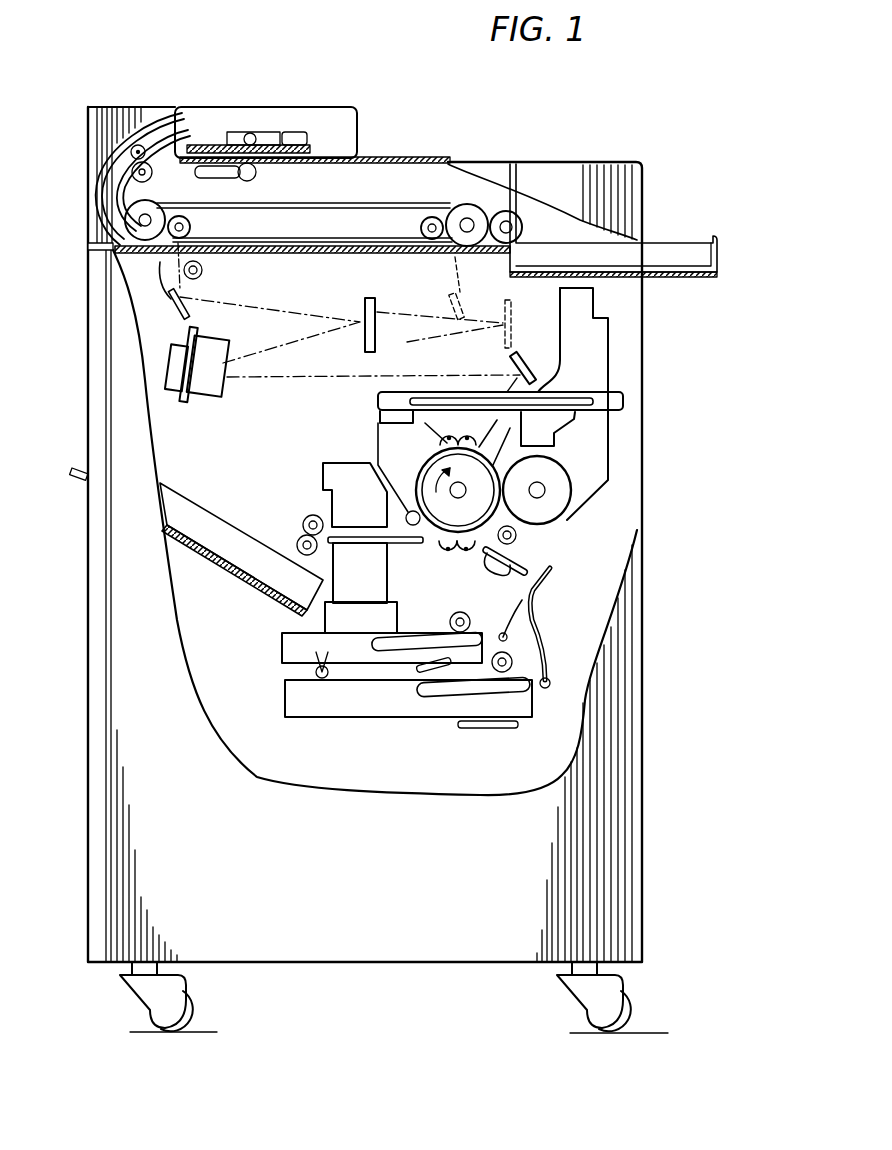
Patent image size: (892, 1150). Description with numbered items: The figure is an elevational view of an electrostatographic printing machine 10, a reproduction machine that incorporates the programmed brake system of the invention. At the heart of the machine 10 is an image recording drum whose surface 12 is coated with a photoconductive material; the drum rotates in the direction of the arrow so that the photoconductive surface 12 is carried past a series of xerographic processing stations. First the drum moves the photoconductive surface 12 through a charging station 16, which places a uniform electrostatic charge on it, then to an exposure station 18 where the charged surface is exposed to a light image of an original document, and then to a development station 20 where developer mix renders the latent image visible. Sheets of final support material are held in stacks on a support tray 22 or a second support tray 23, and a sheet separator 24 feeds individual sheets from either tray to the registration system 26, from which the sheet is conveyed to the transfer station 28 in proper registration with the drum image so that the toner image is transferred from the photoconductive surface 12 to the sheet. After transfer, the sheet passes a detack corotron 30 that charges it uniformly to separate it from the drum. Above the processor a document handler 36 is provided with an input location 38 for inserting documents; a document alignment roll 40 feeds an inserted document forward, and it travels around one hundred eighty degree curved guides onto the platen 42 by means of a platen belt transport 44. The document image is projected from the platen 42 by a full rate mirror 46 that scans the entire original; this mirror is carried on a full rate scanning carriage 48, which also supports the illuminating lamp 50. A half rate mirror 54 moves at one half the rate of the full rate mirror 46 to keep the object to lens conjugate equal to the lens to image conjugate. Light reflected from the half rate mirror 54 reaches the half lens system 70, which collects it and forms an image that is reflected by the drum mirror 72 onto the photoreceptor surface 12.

The electrostatographic printing machine 10 is at (654, 391).
The photoconductive surface 12 is at (432, 462).
The charging station 16 is at (380, 414).
The exposure station 18 is at (490, 436).
The development station 20 is at (548, 477).
The support tray 22 is at (282, 653).
The support tray 23 is at (285, 700).
The sheet separator 24 is at (468, 622).
The registration system 26 is at (522, 540).
The transfer station 28 is at (466, 552).
The detack corotron 30 is at (448, 551).
The document handler 36 is at (425, 152).
The input location 38 is at (359, 159).
The document alignment roll 40 is at (152, 176).
The platen 42 is at (370, 250).
The platen belt transport 44 is at (375, 200).
The full rate mirror 46 is at (183, 298).
The full rate scanning carriage 48 is at (91, 258).
The illuminating lamp 50 is at (203, 270).
The half rate mirror 54 is at (377, 312).
The half lens system 70 is at (215, 352).
The drum mirror 72 is at (497, 324).